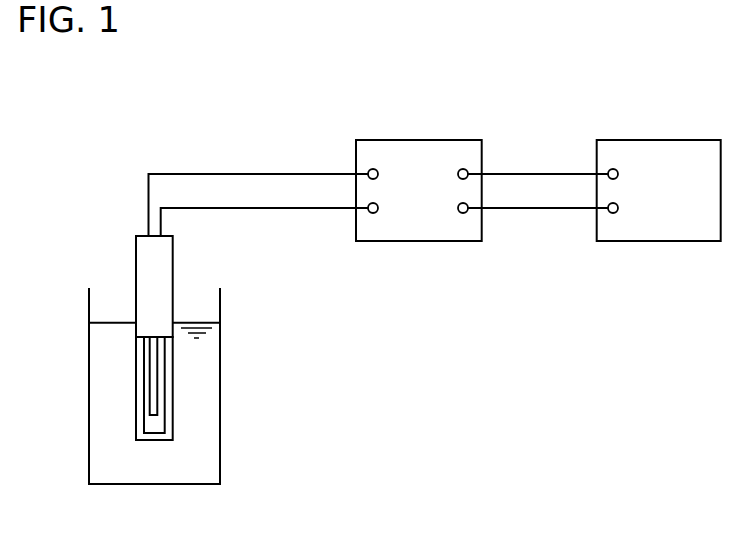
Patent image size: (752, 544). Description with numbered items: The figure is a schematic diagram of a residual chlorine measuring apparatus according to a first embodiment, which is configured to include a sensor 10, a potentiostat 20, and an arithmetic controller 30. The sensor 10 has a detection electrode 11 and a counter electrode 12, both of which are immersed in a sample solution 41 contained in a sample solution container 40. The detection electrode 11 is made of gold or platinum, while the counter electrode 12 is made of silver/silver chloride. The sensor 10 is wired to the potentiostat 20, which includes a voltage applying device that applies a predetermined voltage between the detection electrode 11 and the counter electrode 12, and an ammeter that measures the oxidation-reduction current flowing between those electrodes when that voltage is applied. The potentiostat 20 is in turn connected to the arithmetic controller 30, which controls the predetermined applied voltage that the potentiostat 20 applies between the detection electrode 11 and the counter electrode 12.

The sensor 10 is at (173, 258).
The detection electrode 11 is at (153, 416).
The counter electrode 12 is at (168, 397).
The potentiostat 20 is at (420, 140).
The arithmetic controller 30 is at (660, 140).
The sample solution container 40 is at (220, 360).
The sample solution 41 is at (206, 455).